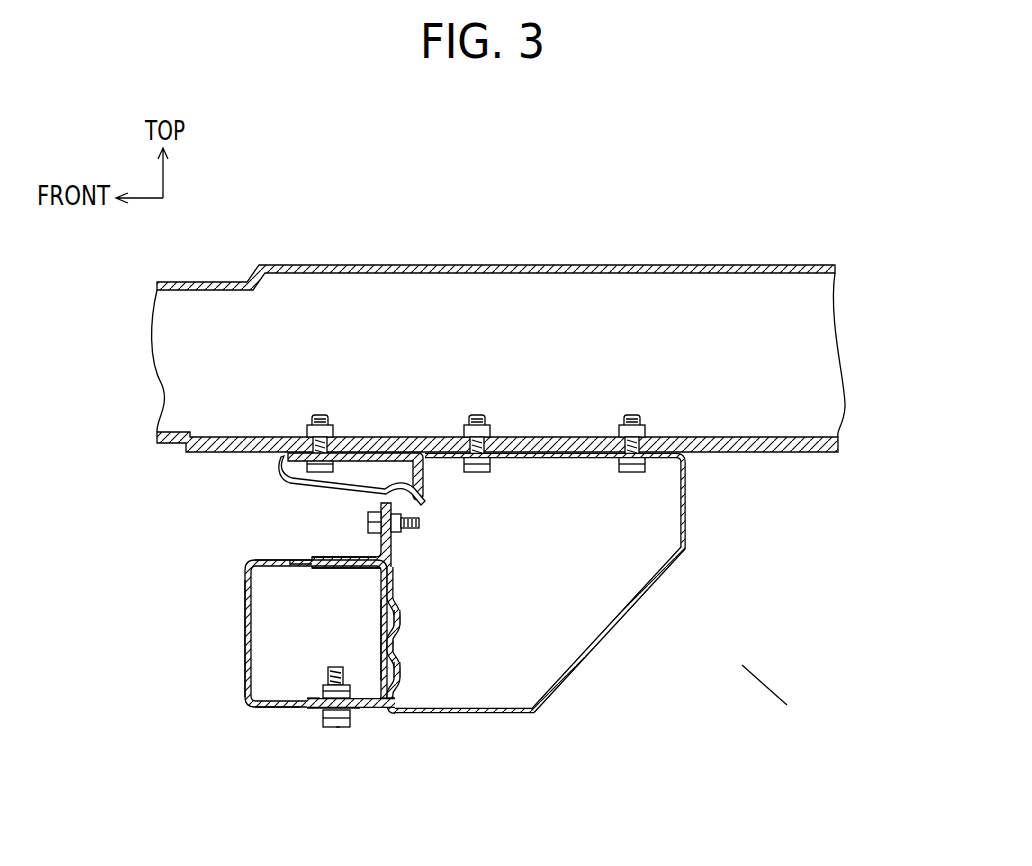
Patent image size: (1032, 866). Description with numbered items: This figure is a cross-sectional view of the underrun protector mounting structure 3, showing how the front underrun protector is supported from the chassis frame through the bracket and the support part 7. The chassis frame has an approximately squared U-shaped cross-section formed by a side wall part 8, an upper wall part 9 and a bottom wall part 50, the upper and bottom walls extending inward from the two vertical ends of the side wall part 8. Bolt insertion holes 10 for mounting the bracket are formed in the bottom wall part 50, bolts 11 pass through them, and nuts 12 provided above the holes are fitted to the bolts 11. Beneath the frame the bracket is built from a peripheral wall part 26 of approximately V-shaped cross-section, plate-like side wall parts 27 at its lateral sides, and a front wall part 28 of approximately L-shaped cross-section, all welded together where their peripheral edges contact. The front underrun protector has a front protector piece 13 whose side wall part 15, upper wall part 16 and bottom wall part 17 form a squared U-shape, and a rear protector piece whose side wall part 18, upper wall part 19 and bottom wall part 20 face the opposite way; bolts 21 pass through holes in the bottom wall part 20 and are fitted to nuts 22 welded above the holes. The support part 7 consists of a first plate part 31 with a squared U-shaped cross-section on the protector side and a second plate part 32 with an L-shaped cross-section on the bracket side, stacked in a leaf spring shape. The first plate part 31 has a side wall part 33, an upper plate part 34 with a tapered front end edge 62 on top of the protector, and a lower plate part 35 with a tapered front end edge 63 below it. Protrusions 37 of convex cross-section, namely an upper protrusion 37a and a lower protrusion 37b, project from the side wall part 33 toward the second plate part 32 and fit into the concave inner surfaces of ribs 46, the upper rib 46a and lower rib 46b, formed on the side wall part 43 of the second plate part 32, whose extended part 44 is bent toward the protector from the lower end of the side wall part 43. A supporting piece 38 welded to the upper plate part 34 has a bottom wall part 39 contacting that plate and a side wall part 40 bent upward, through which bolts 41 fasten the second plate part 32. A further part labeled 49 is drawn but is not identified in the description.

The underrun protector mounting structure 3 is at (742, 665).
The support part 7 is at (422, 691).
The side wall part 8 is at (820, 362).
The upper wall part 9 is at (778, 263).
The bolt insertion holes for mounting the bracket 10 is at (340, 440).
The bolts 11 is at (467, 403).
The nuts 12 is at (305, 430).
The protector piece 13 is at (261, 609).
The side wall part 15 is at (247, 640).
The upper wall part 16 is at (283, 558).
The bottom wall part 17 is at (262, 704).
The side wall part 18 is at (380, 638).
The upper wall part 19 is at (310, 567).
The bottom wall part 20 is at (295, 754).
The bolts 21 is at (343, 723).
The nuts 22 is at (363, 713).
The peripheral wall part 26 is at (551, 583).
The side wall parts 27 is at (618, 597).
The front wall part 28 is at (425, 478).
The first plate part 31 is at (316, 714).
The second plate part 32 is at (332, 713).
The side wall part 33 is at (393, 647).
The upper plate part 34 is at (345, 558).
The lower plate part 35 is at (358, 717).
The protrusions 37 is at (192, 638).
The upper protrusion 37a is at (248, 596).
The lower protrusion 37b is at (249, 690).
The supporting piece 38 is at (368, 530).
The bottom wall part 39 is at (322, 557).
The side wall part 40 is at (413, 537).
The bolts 41 is at (368, 520).
The side wall part 43 is at (395, 562).
The extended part 44 is at (366, 757).
The ribs 46 is at (463, 660).
The upper rib 46a is at (401, 607).
The lower rib 46b is at (402, 683).
The bolt shaft 49 is at (422, 522).
The bottom wall part 50 is at (728, 437).
The front end edge 62 is at (330, 558).
The front end edge 63 is at (308, 704).